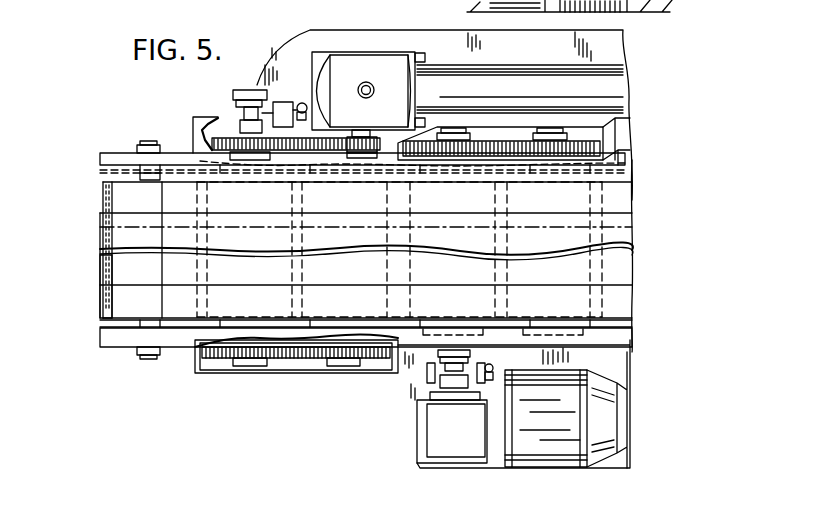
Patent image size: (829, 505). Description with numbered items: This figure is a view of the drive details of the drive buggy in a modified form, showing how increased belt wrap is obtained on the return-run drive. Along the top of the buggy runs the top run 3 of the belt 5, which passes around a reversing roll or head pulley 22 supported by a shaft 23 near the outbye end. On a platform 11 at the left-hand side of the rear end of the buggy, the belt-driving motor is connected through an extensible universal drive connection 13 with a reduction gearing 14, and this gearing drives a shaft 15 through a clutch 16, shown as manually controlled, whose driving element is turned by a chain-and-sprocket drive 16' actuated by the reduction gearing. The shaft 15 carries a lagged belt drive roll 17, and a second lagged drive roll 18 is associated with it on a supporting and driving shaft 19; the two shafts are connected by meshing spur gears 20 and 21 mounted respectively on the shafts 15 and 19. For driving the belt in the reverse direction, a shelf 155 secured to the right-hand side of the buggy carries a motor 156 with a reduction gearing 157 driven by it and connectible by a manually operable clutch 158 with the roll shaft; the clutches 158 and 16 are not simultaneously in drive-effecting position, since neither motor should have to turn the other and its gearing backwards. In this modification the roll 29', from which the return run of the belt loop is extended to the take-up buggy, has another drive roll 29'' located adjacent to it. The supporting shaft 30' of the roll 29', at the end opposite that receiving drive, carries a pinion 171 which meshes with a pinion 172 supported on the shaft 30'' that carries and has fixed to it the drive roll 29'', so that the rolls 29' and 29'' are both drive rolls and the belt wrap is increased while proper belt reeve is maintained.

The top run 3 is at (628, 270).
The belt 5 is at (98, 270).
The platform 11 is at (607, 47).
The extensible universal drive connection 13 is at (51, 227).
The reduction gearing 14 is at (343, 62).
The shaft 15 is at (250, 362).
The clutch 16 is at (270, 90).
The chain-and-sprocket drive 16' is at (286, 121).
The belt drive roll 17 is at (197, 332).
The second drive roll 18 is at (298, 352).
The supporting and driving shaft 19 is at (343, 362).
The spur gear 20 is at (218, 353).
The spur gear 21 is at (328, 355).
The reversing roll or head pulley 22 is at (105, 300).
The shaft 23 is at (145, 143).
The drive roll 29' is at (514, 400).
The drive roll 29'' is at (532, 141).
The supporting shaft 30' is at (484, 87).
The shaft 30'' is at (523, 108).
The shelf 155 is at (377, 380).
The motor 156 is at (555, 450).
The reduction gearing 157 is at (450, 443).
The clutch 158 is at (432, 375).
The pinion 171 is at (452, 147).
The pinion 172 is at (552, 147).